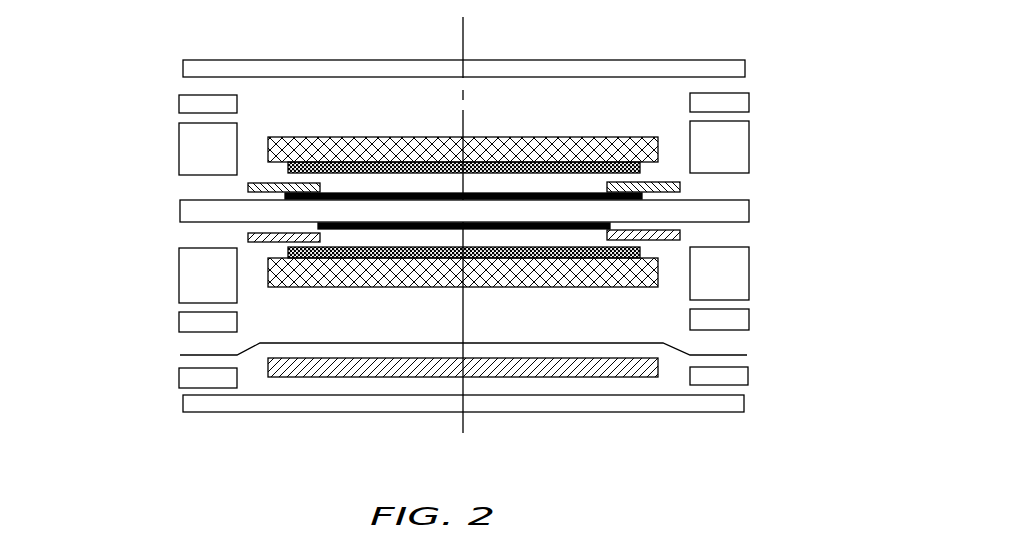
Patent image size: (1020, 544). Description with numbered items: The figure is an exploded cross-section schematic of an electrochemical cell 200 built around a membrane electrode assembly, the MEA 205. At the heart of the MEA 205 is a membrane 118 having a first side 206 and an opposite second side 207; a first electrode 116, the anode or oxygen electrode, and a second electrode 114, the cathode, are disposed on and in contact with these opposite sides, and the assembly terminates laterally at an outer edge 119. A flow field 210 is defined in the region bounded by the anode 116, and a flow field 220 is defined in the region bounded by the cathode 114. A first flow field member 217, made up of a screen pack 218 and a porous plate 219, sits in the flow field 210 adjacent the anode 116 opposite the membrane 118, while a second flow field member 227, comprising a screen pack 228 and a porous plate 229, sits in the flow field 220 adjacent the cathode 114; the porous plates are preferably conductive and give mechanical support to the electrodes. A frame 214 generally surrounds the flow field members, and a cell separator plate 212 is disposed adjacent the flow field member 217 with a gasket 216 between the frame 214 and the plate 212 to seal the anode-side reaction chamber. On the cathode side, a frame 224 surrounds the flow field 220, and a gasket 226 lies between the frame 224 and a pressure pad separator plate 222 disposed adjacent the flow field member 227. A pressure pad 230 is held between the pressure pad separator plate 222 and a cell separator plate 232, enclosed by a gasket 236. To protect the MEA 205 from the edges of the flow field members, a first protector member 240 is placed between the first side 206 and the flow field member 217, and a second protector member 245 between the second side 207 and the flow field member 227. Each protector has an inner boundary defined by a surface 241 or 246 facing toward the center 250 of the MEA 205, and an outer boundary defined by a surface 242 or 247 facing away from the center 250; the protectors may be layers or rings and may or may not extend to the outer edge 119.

The cell 200 is at (148, 44).
The MEA 205 is at (80, 177).
The first side of the membrane 206 is at (720, 191).
The second side of the membrane 207 is at (716, 226).
The flow field 210 is at (408, 119).
The cell separator plate 212 is at (745, 67).
The frame 214 is at (749, 123).
The gasket 216 is at (178, 104).
The flow field member 217 is at (255, 140).
The screen pack 218 is at (545, 136).
The porous plate 219 is at (642, 171).
The flow field 220 is at (414, 330).
The pressure pad separator plate 222 is at (747, 353).
The frame 224 is at (749, 292).
The gasket 226 is at (178, 322).
The flow field member 227 is at (251, 284).
The screen pack 228 is at (545, 287).
The porous plate 229 is at (642, 252).
The pressure pad 230 is at (660, 370).
The cell separator plate 232 is at (744, 401).
The gasket 236 is at (178, 375).
The first protector member 240 is at (262, 182).
The surface facing toward the center 241 is at (337, 187).
The surface facing away from the center 242 is at (702, 184).
The second protector member 245 is at (263, 243).
The surface facing toward the center 246 is at (337, 237).
The surface facing away from the center 247 is at (702, 237).
The center of the MEA 250 is at (462, 423).
The second electrode 114 is at (317, 226).
The first electrode 116 is at (285, 196).
The membrane 118 is at (195, 210).
The outer edge of the MEA 119 is at (767, 205).